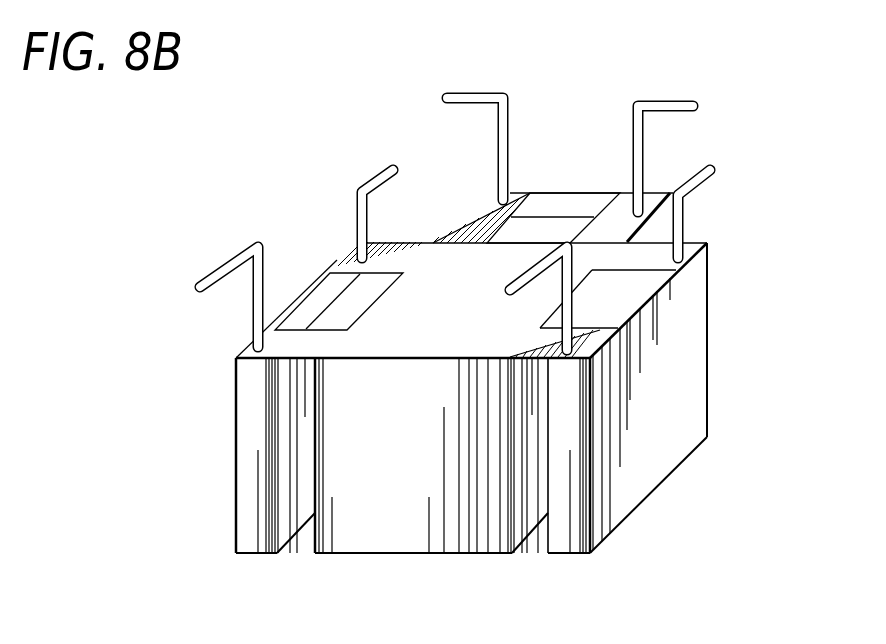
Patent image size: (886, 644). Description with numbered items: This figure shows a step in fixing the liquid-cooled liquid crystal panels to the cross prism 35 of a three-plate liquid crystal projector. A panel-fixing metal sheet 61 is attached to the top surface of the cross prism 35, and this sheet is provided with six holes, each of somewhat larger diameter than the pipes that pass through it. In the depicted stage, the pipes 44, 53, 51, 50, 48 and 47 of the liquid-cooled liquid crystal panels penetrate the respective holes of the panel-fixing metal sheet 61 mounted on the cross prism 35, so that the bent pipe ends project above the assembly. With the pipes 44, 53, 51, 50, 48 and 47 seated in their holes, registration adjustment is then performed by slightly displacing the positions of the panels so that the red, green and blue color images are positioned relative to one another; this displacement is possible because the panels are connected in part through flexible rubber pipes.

The cross prism 35 is at (397, 555).
The pipe 44 is at (252, 312).
The pipe 47 is at (527, 275).
The pipe 48 is at (683, 217).
The pipe 50 is at (647, 138).
The pipe 51 is at (508, 113).
The pipe 53 is at (357, 200).
The panel-fixing metal sheet 61 is at (383, 347).